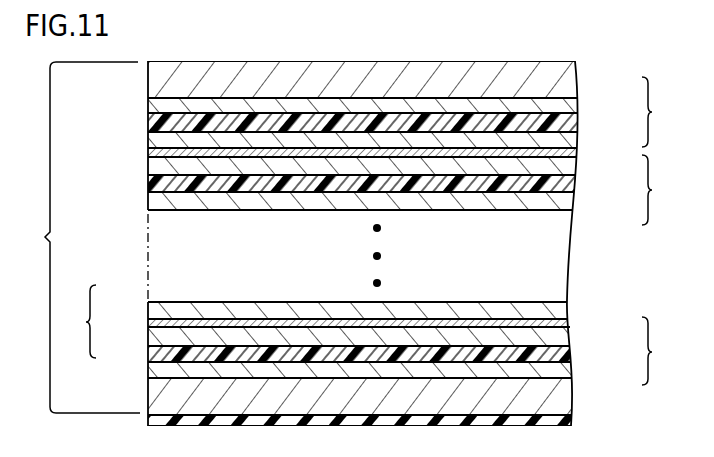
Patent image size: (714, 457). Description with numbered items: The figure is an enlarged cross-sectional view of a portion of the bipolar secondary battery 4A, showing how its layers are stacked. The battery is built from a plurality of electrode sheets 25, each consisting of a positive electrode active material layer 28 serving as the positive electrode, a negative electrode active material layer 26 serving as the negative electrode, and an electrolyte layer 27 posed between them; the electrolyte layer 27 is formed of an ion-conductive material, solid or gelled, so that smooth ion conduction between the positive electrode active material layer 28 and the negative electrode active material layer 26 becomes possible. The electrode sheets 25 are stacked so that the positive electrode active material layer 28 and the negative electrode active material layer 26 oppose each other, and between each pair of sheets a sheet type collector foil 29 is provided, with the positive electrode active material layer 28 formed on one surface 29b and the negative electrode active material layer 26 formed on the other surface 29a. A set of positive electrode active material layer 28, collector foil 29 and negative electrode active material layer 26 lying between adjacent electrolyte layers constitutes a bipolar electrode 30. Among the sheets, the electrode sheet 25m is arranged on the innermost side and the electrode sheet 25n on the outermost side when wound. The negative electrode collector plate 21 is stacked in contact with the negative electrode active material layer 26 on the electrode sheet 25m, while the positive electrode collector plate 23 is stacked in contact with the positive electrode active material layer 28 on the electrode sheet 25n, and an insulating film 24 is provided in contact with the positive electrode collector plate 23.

The bipolar secondary battery 4A is at (78, 237).
The negative electrode collector plate 21 is at (555, 76).
The positive electrode collector plate 23 is at (550, 397).
The insulating film 24 is at (163, 421).
The electrode sheet 25 is at (413, 190).
The electrode sheet arranged on the innermost side 25m is at (421, 112).
The electrode sheet arranged on the outermost side 25n is at (418, 351).
The negative electrode active material layer 26 is at (557, 103).
The electrolyte layer 27 is at (562, 121).
The positive electrode active material layer 28 is at (557, 140).
The collector foil 29 is at (155, 154).
The other surface of collector foil 29a is at (157, 180).
The one surface of collector foil 29b is at (162, 130).
The bipolar electrode 30 is at (77, 321).